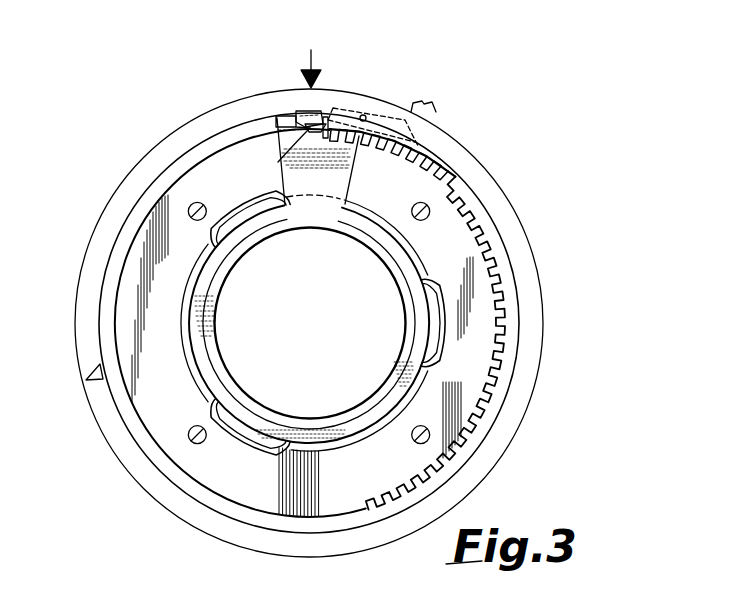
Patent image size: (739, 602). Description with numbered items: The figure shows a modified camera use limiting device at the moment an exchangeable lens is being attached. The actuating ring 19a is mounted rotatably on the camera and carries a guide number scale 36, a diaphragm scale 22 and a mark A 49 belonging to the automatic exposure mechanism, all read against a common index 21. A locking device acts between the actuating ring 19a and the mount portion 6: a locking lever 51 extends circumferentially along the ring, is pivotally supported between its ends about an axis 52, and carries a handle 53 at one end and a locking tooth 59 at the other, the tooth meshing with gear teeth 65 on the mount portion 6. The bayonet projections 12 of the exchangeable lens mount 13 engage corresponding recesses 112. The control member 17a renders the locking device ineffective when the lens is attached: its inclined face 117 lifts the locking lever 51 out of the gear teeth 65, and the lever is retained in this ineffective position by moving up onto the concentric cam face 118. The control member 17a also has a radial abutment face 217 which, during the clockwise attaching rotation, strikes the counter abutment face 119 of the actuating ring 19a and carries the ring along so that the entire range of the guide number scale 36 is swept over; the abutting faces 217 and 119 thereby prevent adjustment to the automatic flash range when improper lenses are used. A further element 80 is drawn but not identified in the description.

The mount portion 6 is at (460, 238).
The bayonet projections 12 is at (252, 210).
The lens mount 13 is at (178, 357).
The control member 17a is at (338, 178).
The actuating ring 19a is at (148, 141).
The common index 21 is at (308, 59).
The diaphragm scale 22 is at (126, 464).
The guide number scale 36 is at (185, 142).
The mark A 49 is at (92, 378).
The locking lever 51 is at (410, 120).
The axis 52 is at (364, 114).
The handle 53 is at (426, 104).
The locking tooth 59 is at (328, 117).
The gear teeth 65 is at (357, 134).
The coupling block 80 is at (309, 119).
The recesses 112 is at (241, 197).
The inclined face 117 is at (300, 157).
The concentric cam face 118 is at (290, 141).
The counter abutment face 119 is at (318, 123).
The radial abutment face 217 is at (253, 117).